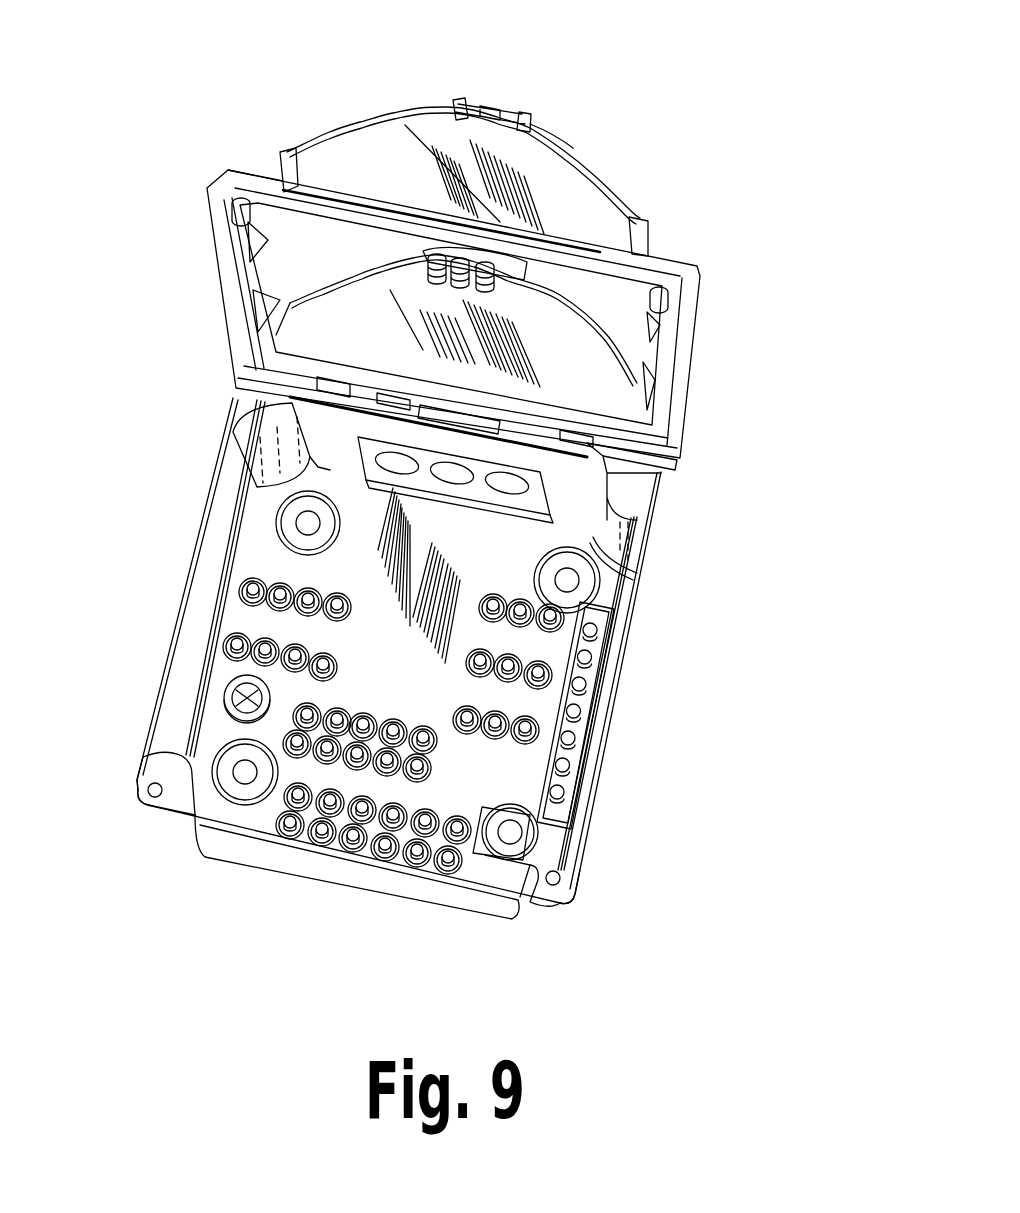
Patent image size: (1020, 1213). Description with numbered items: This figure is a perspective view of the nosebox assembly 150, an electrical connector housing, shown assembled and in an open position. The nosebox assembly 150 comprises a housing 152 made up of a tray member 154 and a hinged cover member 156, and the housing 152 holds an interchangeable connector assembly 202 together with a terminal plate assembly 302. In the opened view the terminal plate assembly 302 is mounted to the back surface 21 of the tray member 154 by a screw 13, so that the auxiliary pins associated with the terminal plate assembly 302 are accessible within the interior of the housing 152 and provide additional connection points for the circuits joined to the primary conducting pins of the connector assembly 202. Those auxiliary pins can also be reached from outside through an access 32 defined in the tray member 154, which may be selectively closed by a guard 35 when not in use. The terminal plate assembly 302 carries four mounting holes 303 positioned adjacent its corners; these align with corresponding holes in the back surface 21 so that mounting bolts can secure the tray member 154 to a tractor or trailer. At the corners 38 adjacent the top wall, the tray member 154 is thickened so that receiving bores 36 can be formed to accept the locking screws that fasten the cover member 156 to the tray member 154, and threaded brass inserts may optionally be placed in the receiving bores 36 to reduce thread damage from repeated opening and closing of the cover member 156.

The nosebox assembly 150 is at (758, 133).
The housing 152 is at (780, 193).
The cover member 156 is at (695, 357).
The interchangeable connector assembly 202 is at (514, 295).
The terminal plate assembly 302 is at (268, 500).
The mounting holes 303 is at (305, 523).
The access 32 is at (557, 486).
The guard 35 is at (553, 497).
The back surface 21 is at (220, 617).
The screw 13 is at (245, 697).
The receiving bores 36 is at (150, 783).
The corners 38 is at (137, 797).
The tray member 154 is at (633, 611).